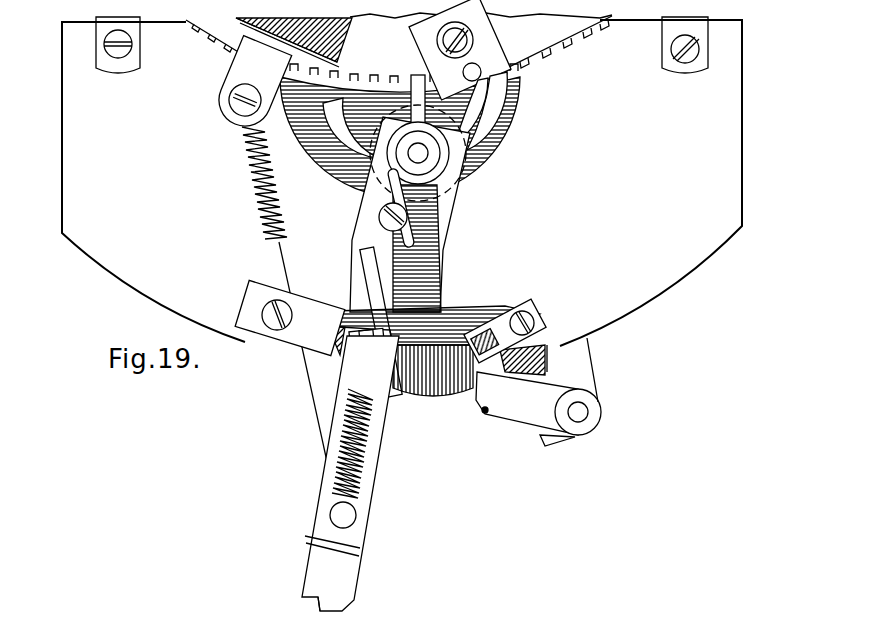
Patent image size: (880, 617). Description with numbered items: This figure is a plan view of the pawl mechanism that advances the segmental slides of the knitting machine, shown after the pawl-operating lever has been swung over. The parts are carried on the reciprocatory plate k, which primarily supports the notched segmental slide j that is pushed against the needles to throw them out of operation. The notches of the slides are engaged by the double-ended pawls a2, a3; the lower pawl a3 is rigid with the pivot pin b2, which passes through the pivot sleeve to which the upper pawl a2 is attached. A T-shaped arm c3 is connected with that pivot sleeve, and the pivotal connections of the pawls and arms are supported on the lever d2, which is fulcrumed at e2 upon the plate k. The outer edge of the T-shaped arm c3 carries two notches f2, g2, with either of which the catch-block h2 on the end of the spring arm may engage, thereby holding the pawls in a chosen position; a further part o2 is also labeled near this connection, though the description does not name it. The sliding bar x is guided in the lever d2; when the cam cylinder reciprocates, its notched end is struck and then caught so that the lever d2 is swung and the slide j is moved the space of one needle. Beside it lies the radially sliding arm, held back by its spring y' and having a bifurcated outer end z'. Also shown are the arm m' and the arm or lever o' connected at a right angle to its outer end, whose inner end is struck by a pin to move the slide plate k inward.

The reciprocatory plate k is at (402, 181).
The segmental slide j is at (399, 50).
The upper pawl a2 is at (505, 95).
The lower pawl a3 is at (490, 118).
The pivot pin b2 is at (440, 162).
The lever d2 is at (445, 236).
The T-shaped arm c3 is at (445, 260).
The fulcrum e2 is at (386, 226).
The rod o2 is at (381, 322).
The notch g2 is at (365, 313).
The catch-block h2 is at (378, 382).
The spring y' is at (274, 274).
The sliding bar x is at (356, 541).
The bifurcated end z' is at (312, 607).
The notch f2 is at (486, 310).
The arm m' is at (538, 409).
The arm or lever o' is at (572, 370).